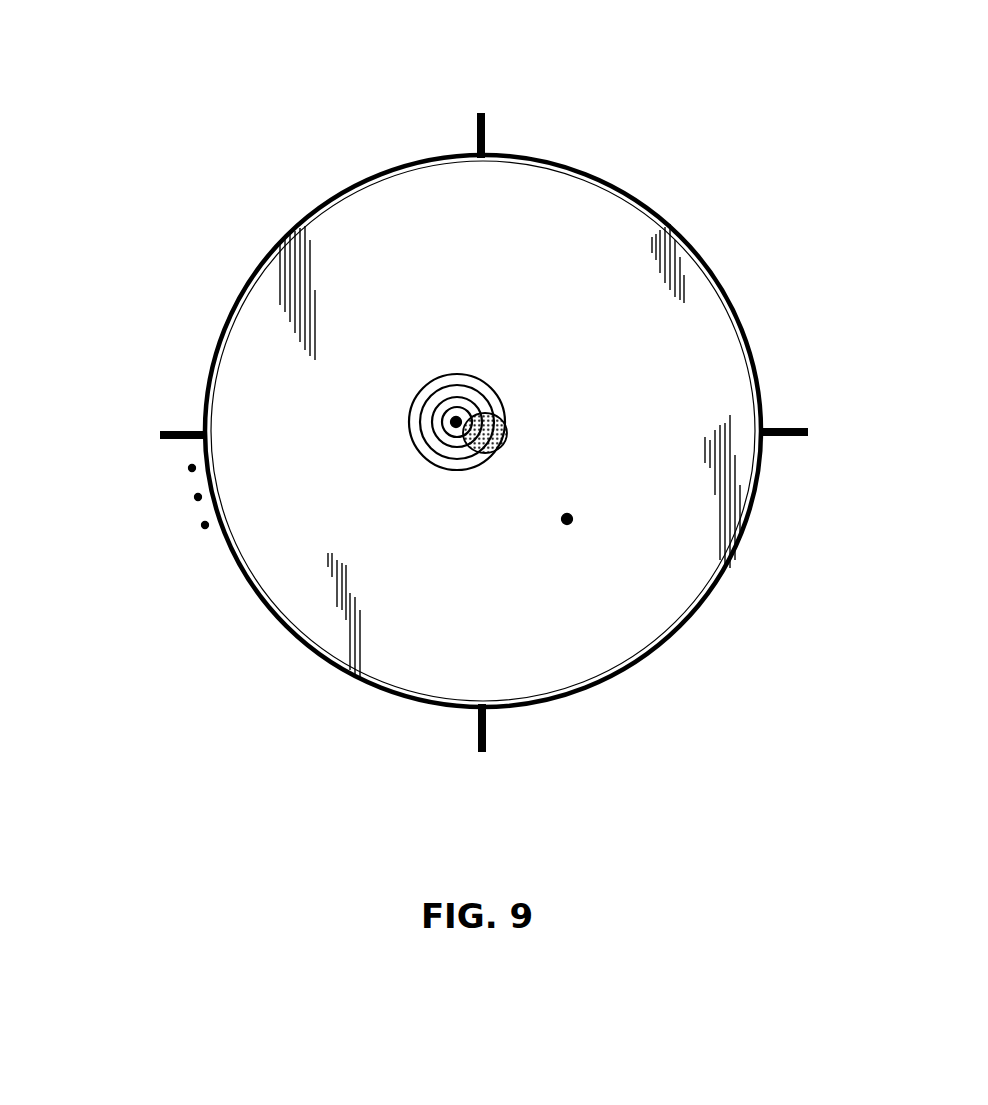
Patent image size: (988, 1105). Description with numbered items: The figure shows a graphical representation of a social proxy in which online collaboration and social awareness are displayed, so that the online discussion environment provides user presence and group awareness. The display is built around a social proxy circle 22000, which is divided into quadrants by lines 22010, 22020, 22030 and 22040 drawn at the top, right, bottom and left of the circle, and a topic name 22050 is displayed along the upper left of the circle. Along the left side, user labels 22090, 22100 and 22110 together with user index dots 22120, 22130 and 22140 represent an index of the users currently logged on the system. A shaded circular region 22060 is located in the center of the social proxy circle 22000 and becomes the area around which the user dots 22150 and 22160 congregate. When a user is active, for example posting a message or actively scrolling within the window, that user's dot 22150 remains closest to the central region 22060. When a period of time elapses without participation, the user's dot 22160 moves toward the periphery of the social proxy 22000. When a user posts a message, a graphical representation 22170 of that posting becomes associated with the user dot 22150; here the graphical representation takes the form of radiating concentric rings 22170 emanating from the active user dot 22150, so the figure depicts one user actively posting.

The social proxy circle 22000 is at (342, 197).
The quadrant dividing line 22010 is at (480, 122).
The quadrant dividing line 22020 is at (803, 428).
The quadrant dividing line 22030 is at (480, 745).
The quadrant dividing line 22040 is at (162, 431).
The topic name 22050 is at (202, 268).
The shaded circular region 22060 is at (490, 455).
The user label 22090 is at (92, 477).
The user label 22100 is at (97, 518).
The user label 22110 is at (100, 572).
The user index dot 22120 is at (192, 468).
The user index dot 22130 is at (198, 497).
The user index dot 22140 is at (205, 525).
The user dot 22150 is at (456, 422).
The user dot 22160 is at (567, 519).
The graphical representation of a posting 22170 is at (463, 377).